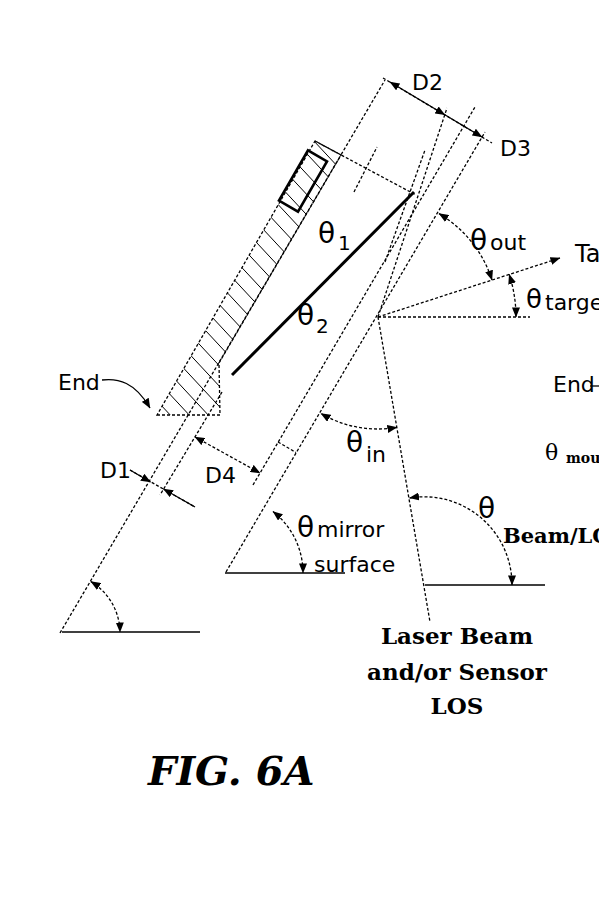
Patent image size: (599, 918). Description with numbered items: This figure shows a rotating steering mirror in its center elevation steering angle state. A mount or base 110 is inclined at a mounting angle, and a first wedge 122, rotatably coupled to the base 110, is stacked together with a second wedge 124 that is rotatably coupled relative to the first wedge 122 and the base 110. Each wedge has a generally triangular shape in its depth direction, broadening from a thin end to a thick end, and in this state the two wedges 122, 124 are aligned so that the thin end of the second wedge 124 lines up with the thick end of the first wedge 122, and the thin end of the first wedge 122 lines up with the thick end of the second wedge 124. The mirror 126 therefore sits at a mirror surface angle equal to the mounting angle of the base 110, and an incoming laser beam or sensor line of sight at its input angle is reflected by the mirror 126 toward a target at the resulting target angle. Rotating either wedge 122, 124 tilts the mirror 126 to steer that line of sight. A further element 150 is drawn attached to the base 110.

The mount or base 110 is at (230, 292).
The first wedge 122 is at (355, 339).
The second wedge 124 is at (218, 443).
The mirror 126 is at (388, 323).
The sensor / actuator block 150 is at (302, 158).